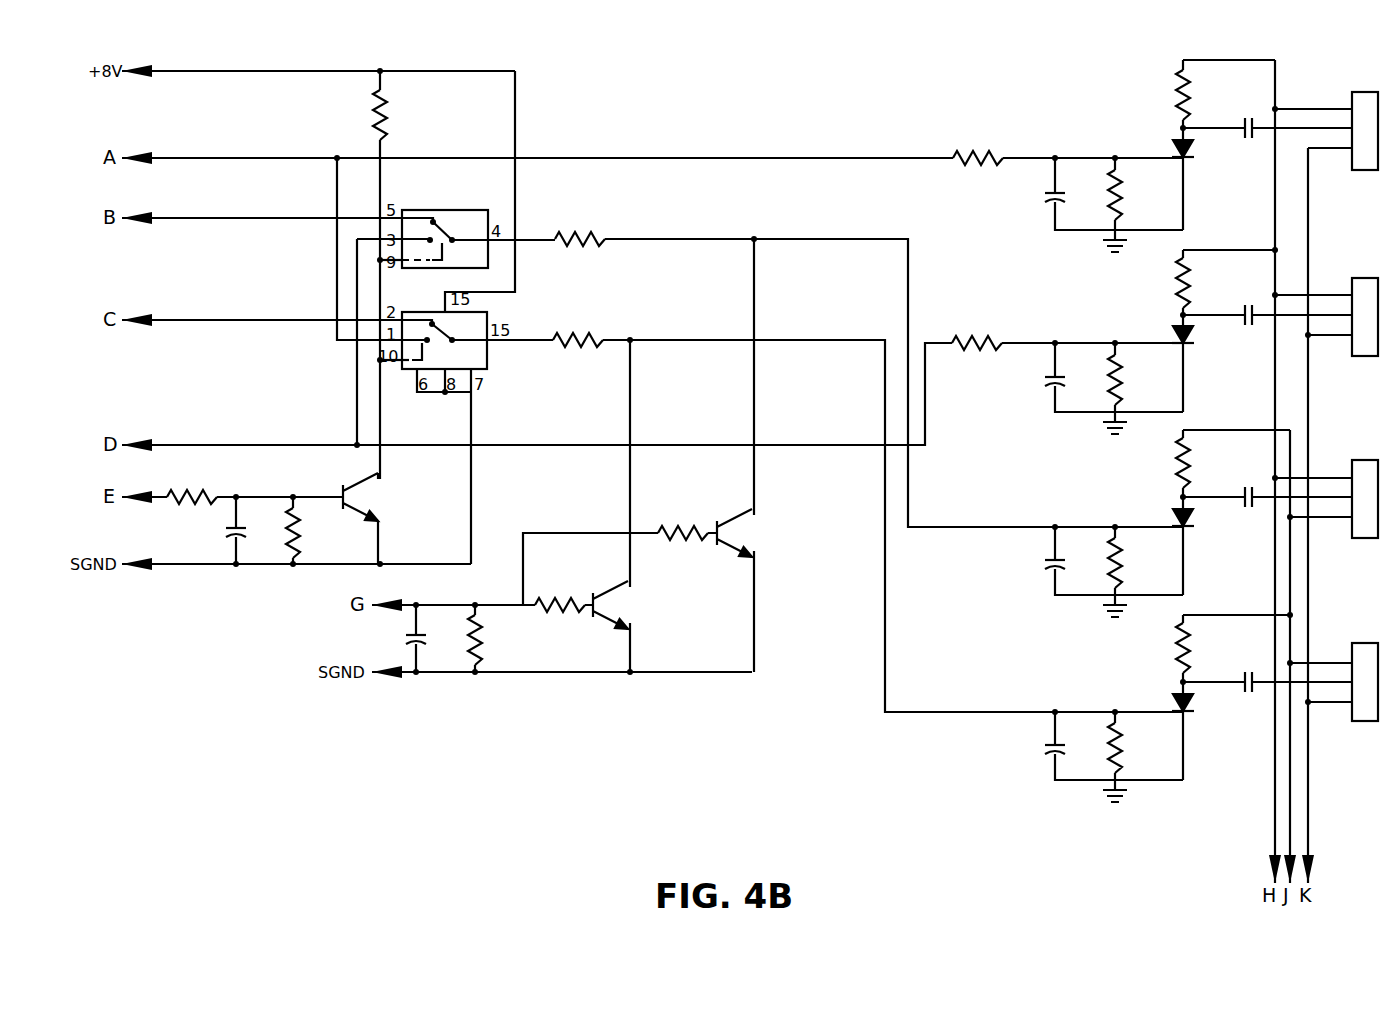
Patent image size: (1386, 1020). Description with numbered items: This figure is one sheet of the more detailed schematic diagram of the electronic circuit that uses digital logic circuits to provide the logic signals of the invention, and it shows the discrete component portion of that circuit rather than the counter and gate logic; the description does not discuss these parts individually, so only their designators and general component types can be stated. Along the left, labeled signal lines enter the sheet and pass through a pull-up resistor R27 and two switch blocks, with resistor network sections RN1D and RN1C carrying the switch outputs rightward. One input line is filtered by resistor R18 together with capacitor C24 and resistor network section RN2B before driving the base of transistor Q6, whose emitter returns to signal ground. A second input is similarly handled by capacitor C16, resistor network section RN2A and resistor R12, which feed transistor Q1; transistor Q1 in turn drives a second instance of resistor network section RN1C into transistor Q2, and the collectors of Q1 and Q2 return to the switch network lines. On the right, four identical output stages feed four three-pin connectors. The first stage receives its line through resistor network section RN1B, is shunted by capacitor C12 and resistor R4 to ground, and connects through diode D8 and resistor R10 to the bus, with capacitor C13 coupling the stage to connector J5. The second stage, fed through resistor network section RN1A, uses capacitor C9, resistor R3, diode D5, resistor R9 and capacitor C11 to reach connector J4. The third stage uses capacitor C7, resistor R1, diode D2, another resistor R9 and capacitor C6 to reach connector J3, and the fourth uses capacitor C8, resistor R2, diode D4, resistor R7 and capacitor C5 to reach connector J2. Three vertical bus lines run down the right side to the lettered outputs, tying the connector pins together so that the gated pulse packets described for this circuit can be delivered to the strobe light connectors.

The resistor 33k R27 is at (397, 115).
The resistor network section 10k RN1D is at (577, 254).
The resistor network section 10k RN1C is at (624, 452).
The resistor network section 10k RN1B is at (1062, 173).
The resistor network section 10k RN1A is at (1061, 358).
The resistor 12k R18 is at (192, 519).
The capacitor 10uF C24 is at (250, 530).
The resistor network section 10k RN2B is at (316, 531).
The transistor 2N4401 Q6 is at (394, 518).
The capacitor 10uF C16 is at (430, 638).
The resistor network section 10k RN2A is at (498, 638).
The resistor 12k R12 is at (560, 626).
The transistor 2N4401 Q1 is at (644, 605).
The transistor 2N4401 Q2 is at (768, 533).
The capacitor 10uF C12 is at (1114, 192).
The resistor 2.2k R4 is at (1130, 203).
The diode D8 is at (1196, 179).
The resistor 270k R10 is at (1225, 95).
The capacitor 0.1uF C13 is at (1267, 150).
The connector J5 is at (1325, 120).
The capacitor 10uF C9 is at (1114, 376).
The resistor 2.2k R3 is at (1130, 387).
The diode D5 is at (1196, 363).
The resistor 270k R9 is at (1233, 373).
The capacitor 0.1uF C11 is at (1267, 336).
The connector J4 is at (1325, 306).
The capacitor 10uF C7 is at (1114, 559).
The resistor 2.2k R1 is at (1130, 570).
The diode D2 is at (1196, 546).
The capacitor 0.1uF C6 is at (1267, 518).
The connector J3 is at (1325, 488).
The capacitor 10uF C8 is at (1114, 744).
The resistor 2.2k R2 is at (1130, 755).
The diode D4 is at (1196, 731).
The resistor 270k R7 is at (1234, 648).
The capacitor 0.1uF C5 is at (1267, 703).
The connector J2 is at (1332, 671).